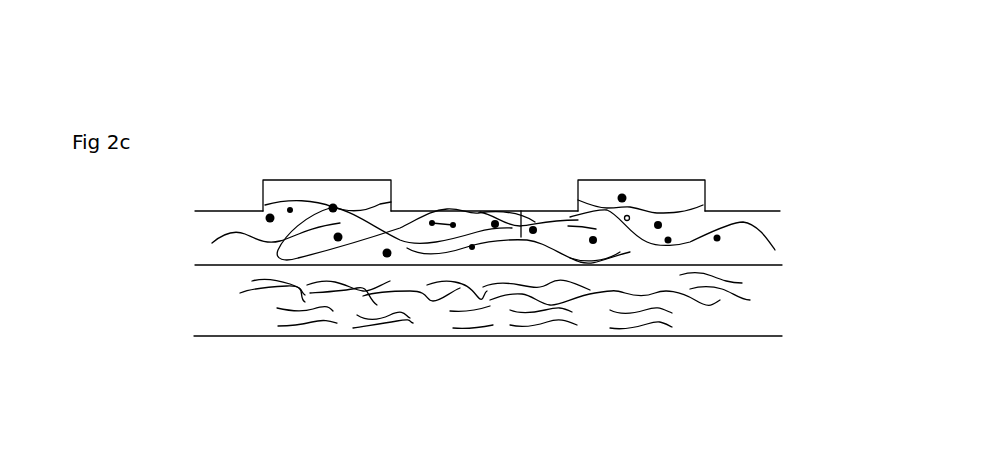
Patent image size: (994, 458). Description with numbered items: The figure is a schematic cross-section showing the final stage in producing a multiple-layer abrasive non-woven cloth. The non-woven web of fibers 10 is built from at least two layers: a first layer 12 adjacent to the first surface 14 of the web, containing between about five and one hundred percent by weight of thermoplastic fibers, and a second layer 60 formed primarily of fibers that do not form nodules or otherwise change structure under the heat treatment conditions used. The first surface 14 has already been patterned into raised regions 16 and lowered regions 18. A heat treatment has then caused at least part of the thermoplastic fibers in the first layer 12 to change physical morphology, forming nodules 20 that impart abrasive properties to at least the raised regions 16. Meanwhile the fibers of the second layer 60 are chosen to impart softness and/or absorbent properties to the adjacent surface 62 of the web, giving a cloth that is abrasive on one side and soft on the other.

The non-woven web of fibers 10 is at (777, 135).
The first layer 12 is at (773, 237).
The first surface 14 is at (136, 205).
The raised regions 16 is at (332, 189).
The lowered regions 18 is at (477, 217).
The nodules 20 is at (263, 213).
The second layer 60 is at (760, 298).
The adjacent surface 62 is at (520, 310).